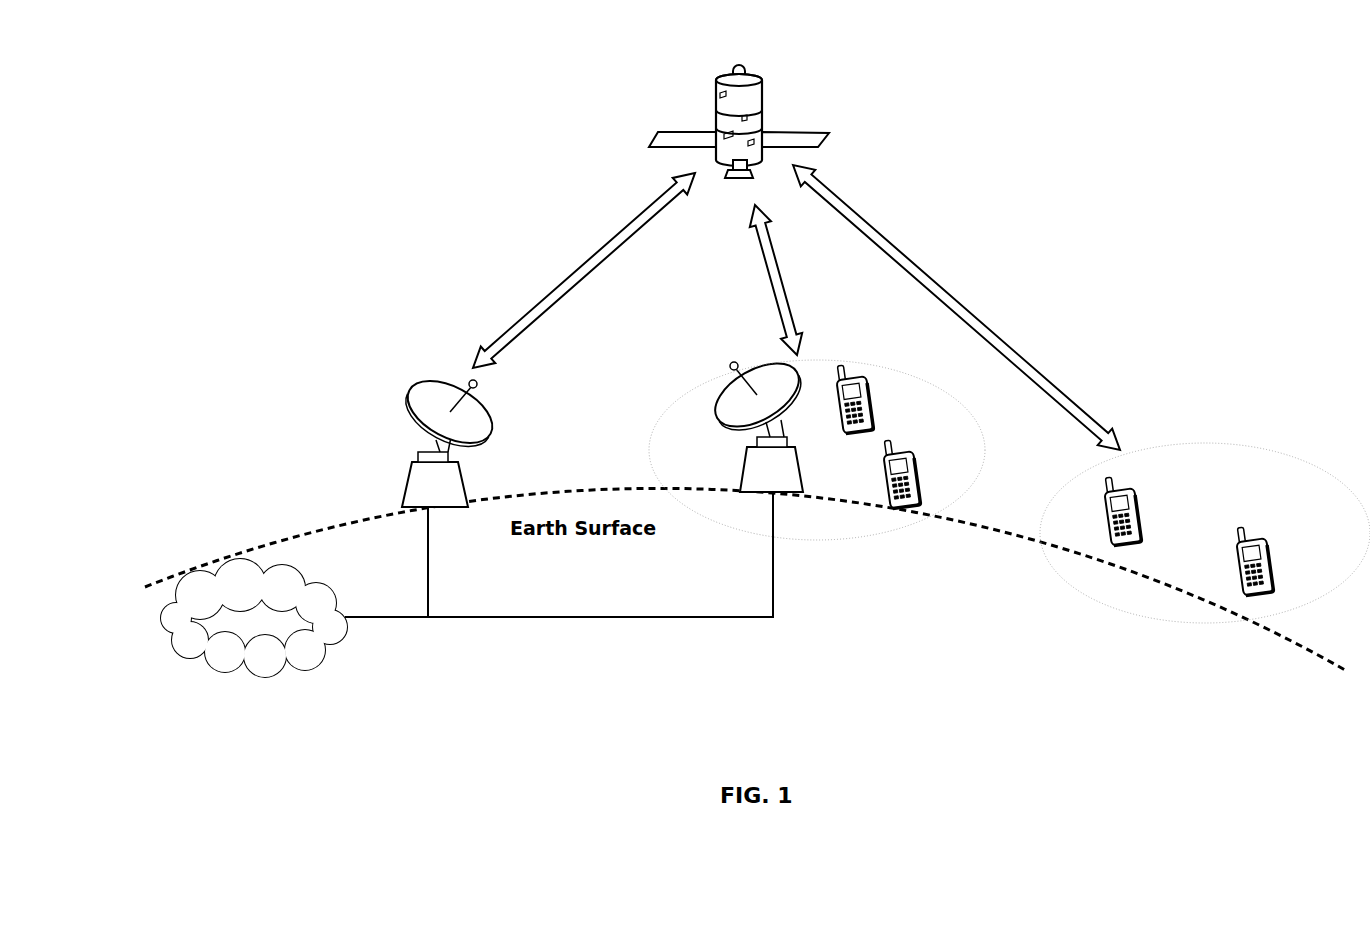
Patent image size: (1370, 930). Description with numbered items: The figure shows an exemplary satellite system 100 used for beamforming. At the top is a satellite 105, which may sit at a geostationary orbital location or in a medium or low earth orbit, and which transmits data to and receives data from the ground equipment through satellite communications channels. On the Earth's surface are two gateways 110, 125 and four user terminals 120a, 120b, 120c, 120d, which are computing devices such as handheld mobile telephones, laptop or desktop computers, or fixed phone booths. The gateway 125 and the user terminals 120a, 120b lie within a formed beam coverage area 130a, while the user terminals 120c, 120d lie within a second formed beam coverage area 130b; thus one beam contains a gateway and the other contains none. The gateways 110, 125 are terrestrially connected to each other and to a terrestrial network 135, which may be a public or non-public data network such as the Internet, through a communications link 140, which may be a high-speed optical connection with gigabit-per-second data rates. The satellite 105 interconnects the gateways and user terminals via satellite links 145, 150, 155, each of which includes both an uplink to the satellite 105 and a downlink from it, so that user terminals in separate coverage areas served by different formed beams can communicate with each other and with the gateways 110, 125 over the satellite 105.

The satellite system 100 is at (361, 157).
The satellite 105 is at (716, 93).
The gateway 110 is at (412, 426).
The user terminal 120a is at (874, 408).
The user terminal 120b is at (921, 494).
The user terminal 120c is at (1142, 526).
The user terminal 120d is at (1274, 583).
The gateway 125 is at (743, 457).
The formed beam coverage area 130a is at (815, 540).
The formed beam coverage area 130b is at (1205, 624).
The terrestrial network 135 is at (163, 627).
The communications link 140 is at (590, 617).
The satellite link 145 is at (575, 290).
The satellite link 150 is at (785, 287).
The satellite link 155 is at (985, 318).